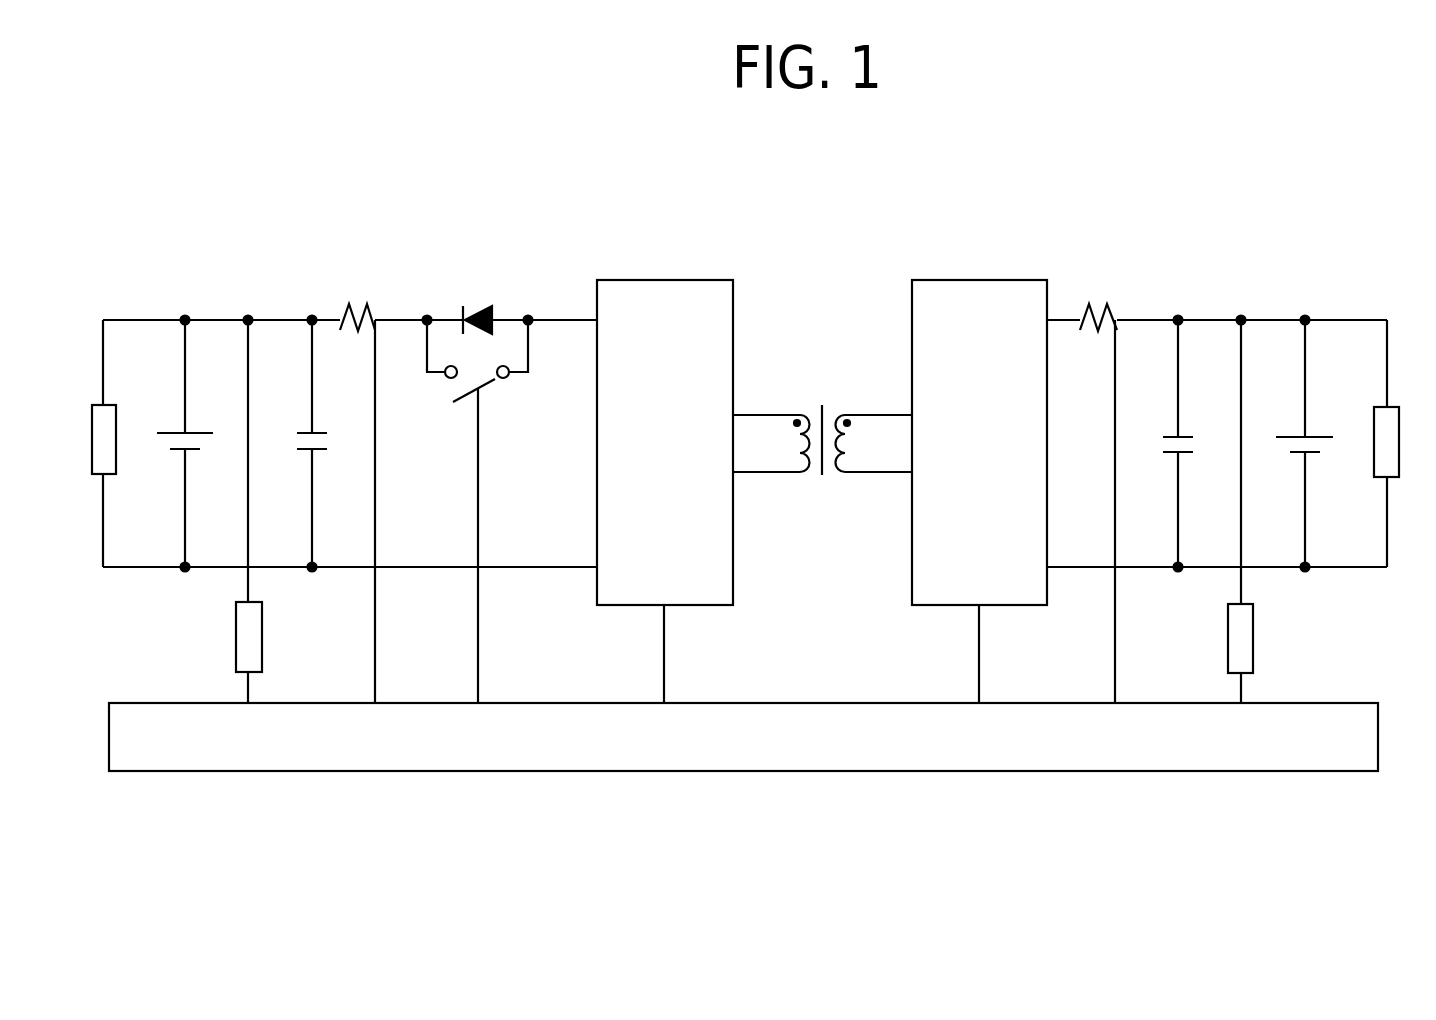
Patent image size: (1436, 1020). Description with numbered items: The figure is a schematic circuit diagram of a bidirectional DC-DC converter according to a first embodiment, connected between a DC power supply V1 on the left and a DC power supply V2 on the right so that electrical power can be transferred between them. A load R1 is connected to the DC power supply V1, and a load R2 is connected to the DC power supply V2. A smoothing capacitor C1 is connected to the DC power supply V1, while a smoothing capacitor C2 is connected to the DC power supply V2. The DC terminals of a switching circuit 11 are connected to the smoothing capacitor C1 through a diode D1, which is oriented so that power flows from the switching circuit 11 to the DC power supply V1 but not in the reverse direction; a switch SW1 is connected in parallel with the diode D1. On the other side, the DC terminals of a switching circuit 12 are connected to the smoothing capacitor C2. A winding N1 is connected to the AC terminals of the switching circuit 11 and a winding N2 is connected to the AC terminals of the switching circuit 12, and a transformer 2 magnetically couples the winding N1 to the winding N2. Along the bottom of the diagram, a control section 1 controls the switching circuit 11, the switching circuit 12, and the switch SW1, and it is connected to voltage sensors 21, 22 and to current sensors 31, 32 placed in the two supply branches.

The control section 1 is at (781, 703).
The transformer 2 is at (822, 443).
The switching circuit 11 is at (655, 280).
The switching circuit 12 is at (981, 280).
The voltage sensor 21 is at (236, 637).
The voltage sensor 22 is at (1228, 640).
The current sensor 31 is at (362, 305).
The current sensor 32 is at (1105, 305).
The load R1 is at (116, 474).
The DC power supply V1 is at (191, 450).
The smoothing capacitor C1 is at (318, 450).
The diode D1 is at (484, 305).
The switch SW1 is at (487, 385).
The winding N1 is at (795, 452).
The winding N2 is at (848, 452).
The smoothing capacitor C2 is at (1188, 452).
The DC power supply V2 is at (1313, 452).
The load R2 is at (1393, 477).